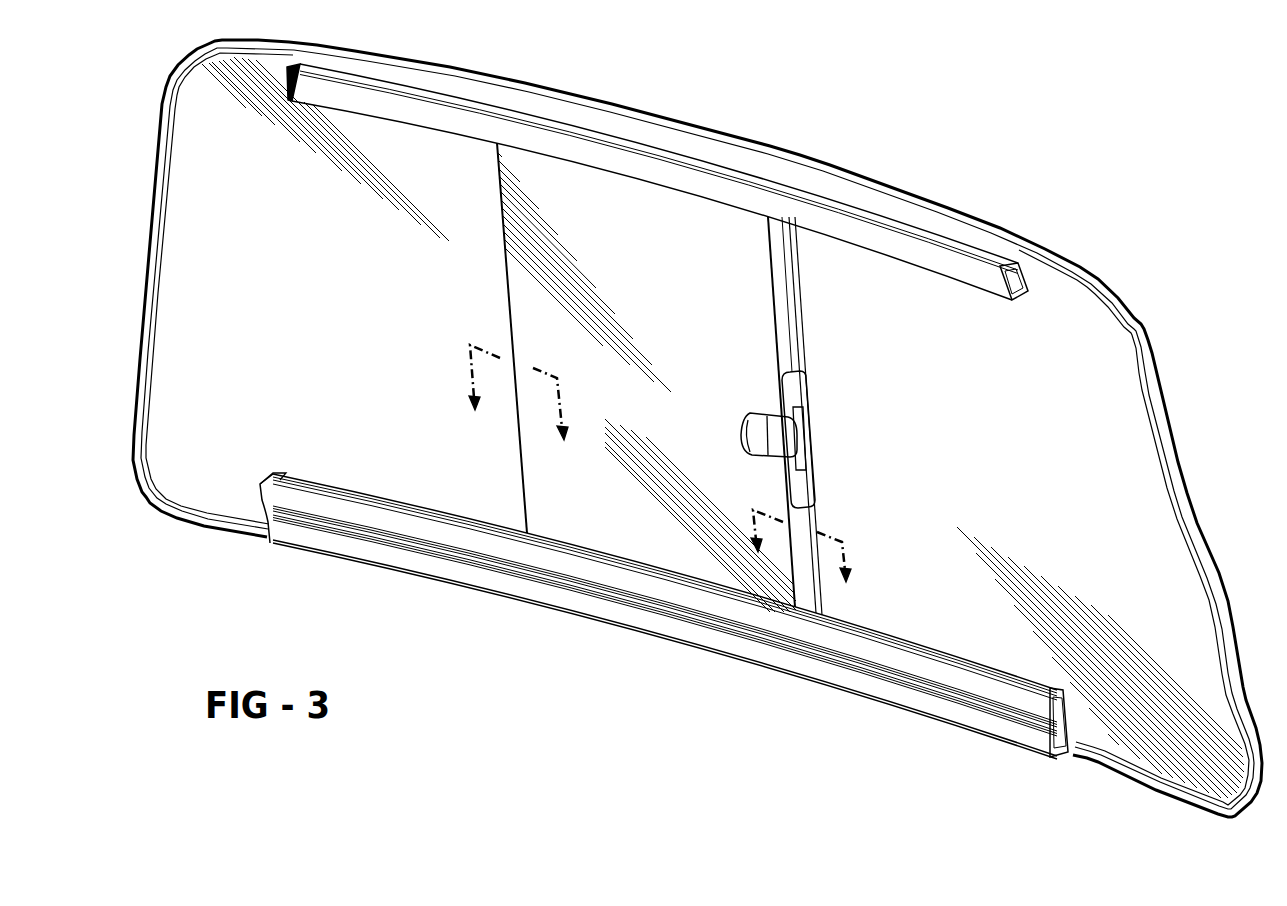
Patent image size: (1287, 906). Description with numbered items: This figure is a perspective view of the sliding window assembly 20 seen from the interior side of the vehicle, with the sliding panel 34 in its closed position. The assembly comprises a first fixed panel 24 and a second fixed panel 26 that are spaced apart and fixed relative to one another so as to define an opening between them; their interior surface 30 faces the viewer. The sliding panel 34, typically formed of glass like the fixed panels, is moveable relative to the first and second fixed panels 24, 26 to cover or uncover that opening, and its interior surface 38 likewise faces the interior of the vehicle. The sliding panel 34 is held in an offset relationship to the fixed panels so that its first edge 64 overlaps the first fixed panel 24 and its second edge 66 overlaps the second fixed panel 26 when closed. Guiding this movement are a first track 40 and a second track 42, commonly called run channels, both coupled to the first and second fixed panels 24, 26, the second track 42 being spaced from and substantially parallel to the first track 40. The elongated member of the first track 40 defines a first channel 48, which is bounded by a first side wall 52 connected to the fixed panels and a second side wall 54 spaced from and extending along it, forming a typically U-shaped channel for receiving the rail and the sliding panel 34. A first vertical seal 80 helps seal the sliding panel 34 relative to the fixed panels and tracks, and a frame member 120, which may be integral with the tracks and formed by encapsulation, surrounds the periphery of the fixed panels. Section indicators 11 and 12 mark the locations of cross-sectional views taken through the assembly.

The sliding window assembly 20 is at (855, 138).
The first fixed panel 24 is at (190, 155).
The second fixed panel 26 is at (1107, 393).
The interior surface 30 is at (190, 297).
The sliding panel 34 is at (537, 483).
The interior surface 38 is at (717, 240).
The first track 40 is at (925, 700).
The second track 42 is at (980, 268).
The first channel 48 is at (370, 502).
The first side wall 52 is at (1033, 690).
The second side wall 54 is at (1017, 690).
The first edge 64 is at (500, 240).
The second edge 66 is at (800, 355).
The first vertical seal 80 is at (800, 323).
The frame member 120 is at (1193, 503).
The section line 11- 11 is at (522, 402).
The section line 12- 12 is at (804, 558).